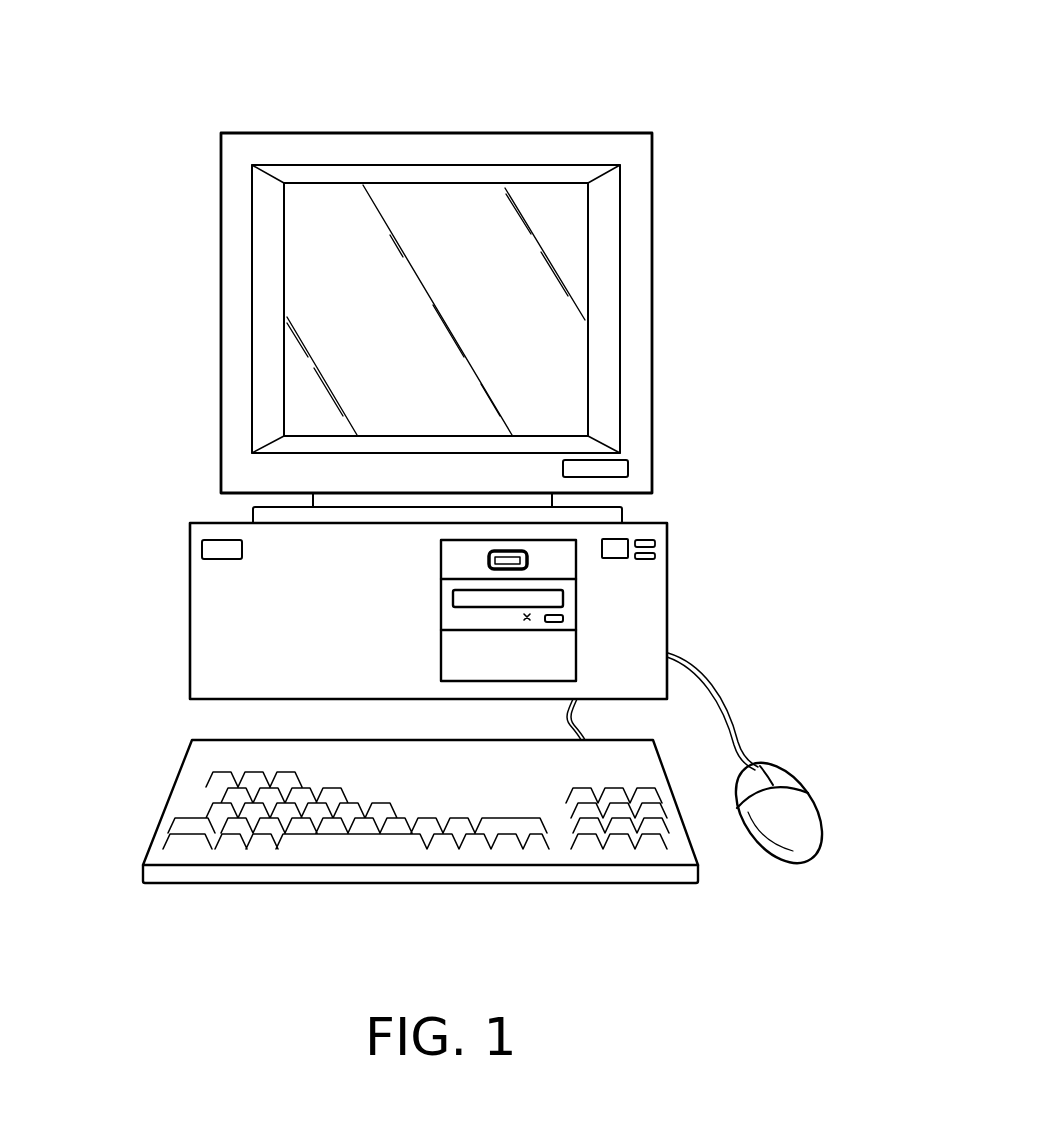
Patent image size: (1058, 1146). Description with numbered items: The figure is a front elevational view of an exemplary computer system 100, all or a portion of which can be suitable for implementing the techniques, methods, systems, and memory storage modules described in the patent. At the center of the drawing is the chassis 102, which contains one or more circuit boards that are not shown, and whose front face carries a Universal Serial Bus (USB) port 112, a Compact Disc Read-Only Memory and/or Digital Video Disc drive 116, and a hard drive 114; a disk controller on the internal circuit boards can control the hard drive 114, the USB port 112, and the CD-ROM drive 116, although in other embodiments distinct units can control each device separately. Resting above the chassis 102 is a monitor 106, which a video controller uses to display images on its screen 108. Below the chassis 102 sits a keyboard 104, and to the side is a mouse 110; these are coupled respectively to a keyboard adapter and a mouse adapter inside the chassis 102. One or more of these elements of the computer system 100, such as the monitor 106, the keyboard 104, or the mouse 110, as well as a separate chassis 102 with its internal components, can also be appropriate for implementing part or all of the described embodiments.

The computer system 100 is at (642, 107).
The chassis 102 is at (188, 612).
The keyboard 104 is at (167, 797).
The monitor 106 is at (308, 133).
The screen 108 is at (338, 314).
The mouse 110 is at (802, 803).
The Universal Serial Bus (USB) port 112 is at (530, 555).
The hard drive 114 is at (567, 653).
The Compact Disc Read-Only Memory (CD-ROM) and/or Digital Video Disc (DVD) drive 116 is at (567, 607).